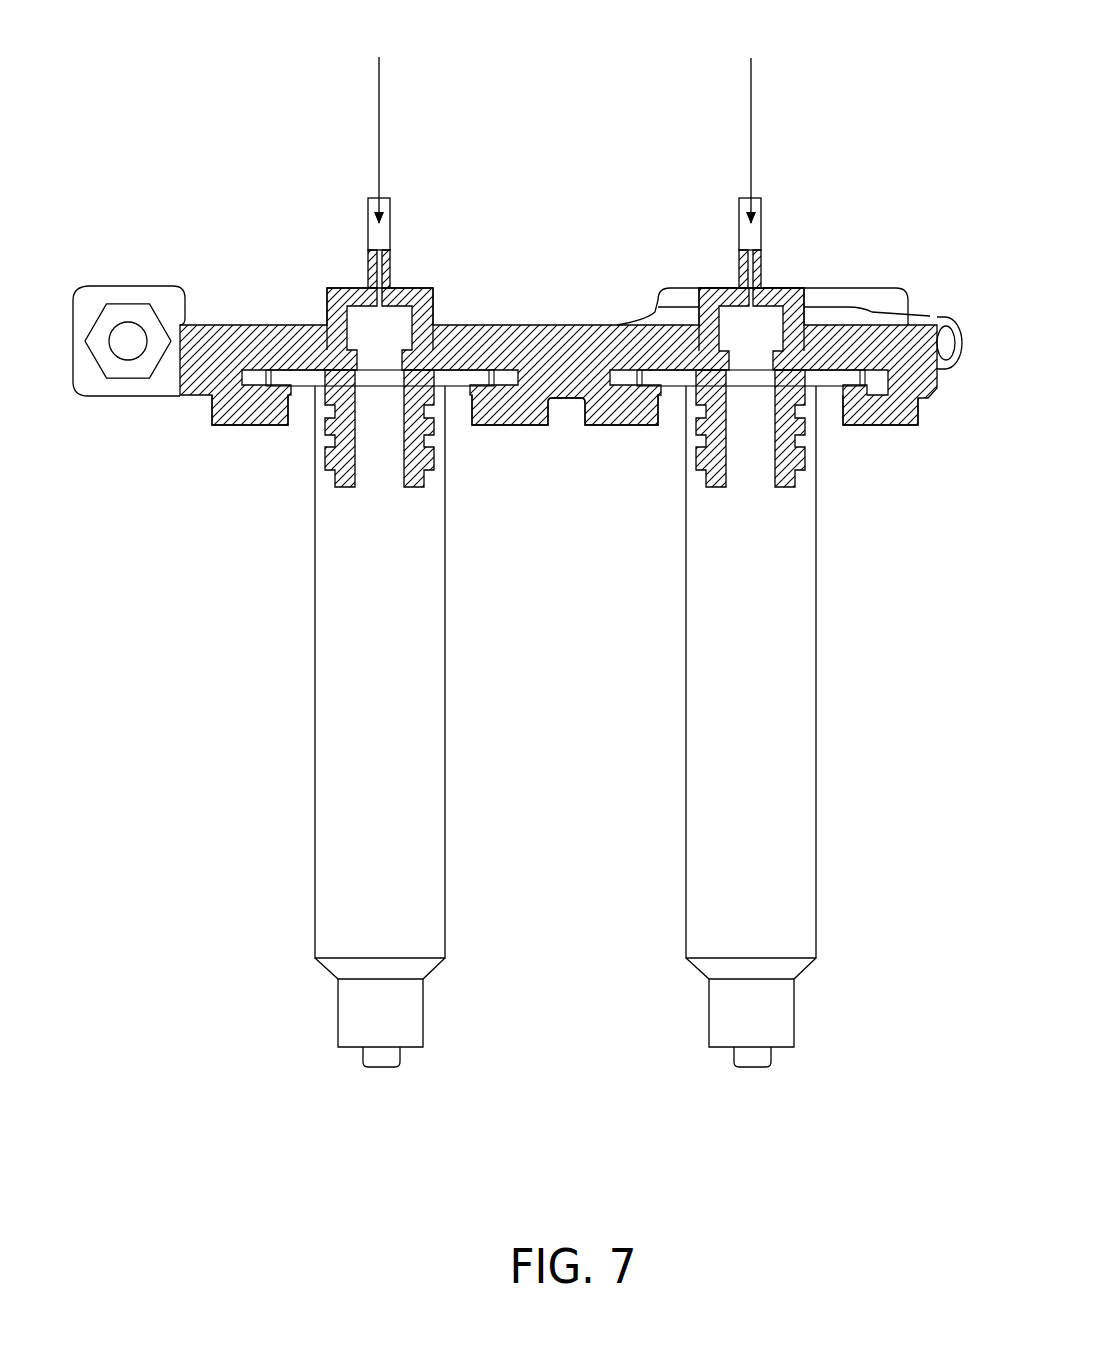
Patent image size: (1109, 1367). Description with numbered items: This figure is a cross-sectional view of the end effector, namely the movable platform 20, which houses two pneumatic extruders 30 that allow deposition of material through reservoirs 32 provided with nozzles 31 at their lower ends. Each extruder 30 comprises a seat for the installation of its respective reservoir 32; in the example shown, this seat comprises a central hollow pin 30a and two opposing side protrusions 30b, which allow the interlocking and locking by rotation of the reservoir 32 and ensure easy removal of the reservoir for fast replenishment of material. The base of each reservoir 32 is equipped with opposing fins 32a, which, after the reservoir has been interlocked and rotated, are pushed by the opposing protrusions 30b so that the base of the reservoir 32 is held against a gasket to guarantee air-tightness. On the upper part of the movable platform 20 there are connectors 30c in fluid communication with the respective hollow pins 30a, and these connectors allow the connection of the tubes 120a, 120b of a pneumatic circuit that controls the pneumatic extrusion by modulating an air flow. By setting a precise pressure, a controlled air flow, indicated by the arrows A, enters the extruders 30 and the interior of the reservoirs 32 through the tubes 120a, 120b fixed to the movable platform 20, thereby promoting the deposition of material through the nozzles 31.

The movable platform 20 is at (549, 140).
The pneumatic extruder 30 is at (342, 276).
The central hollow pin 30a is at (337, 488).
The opposing side protrusion 30b is at (250, 426).
The connector 30c is at (392, 268).
The nozzle 31 is at (365, 1056).
The reservoir 32 is at (333, 850).
The opposing fin 32a is at (282, 372).
The tube of the pneumatic circuit 120a is at (739, 212).
The tube of the pneumatic circuit 120b is at (390, 208).
The air flow arrows A is at (379, 132).